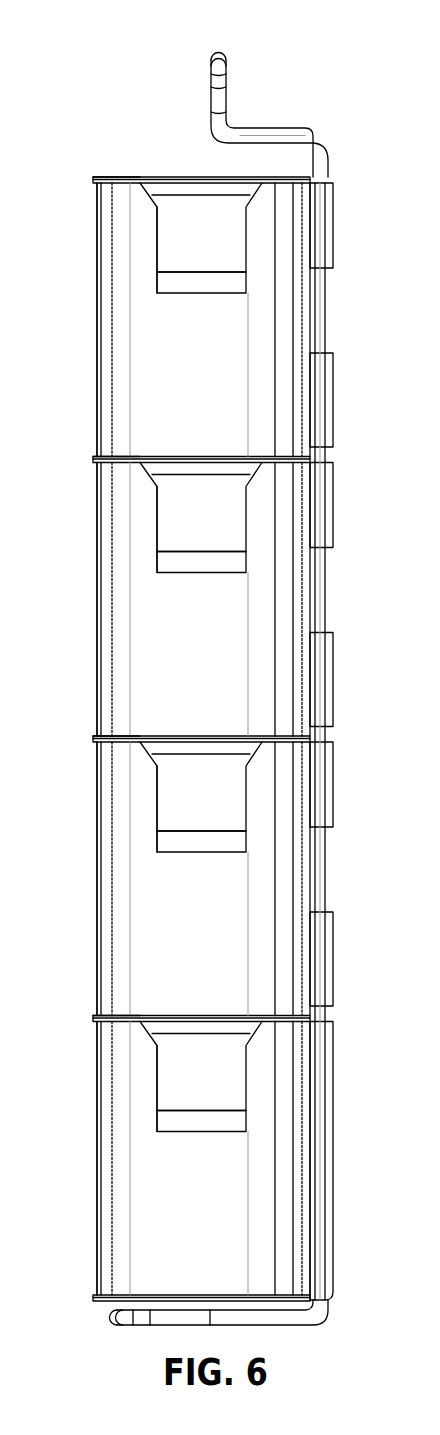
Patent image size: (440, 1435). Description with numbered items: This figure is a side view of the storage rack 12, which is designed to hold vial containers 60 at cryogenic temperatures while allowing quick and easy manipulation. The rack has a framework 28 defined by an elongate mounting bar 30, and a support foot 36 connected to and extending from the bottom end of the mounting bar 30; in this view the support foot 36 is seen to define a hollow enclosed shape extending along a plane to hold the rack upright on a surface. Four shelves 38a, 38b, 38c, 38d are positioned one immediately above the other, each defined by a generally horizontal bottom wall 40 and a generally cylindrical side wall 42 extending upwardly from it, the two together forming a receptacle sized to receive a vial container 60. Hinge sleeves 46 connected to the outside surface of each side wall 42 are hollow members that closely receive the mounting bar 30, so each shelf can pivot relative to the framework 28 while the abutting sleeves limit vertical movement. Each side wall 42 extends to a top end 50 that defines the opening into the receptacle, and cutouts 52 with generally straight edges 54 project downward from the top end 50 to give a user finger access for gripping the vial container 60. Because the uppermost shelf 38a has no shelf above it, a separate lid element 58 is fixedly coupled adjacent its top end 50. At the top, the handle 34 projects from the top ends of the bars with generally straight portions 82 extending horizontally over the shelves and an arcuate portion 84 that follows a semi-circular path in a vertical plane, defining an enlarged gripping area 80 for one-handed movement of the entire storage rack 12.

The storage rack 12 is at (67, 122).
The framework 28 is at (331, 305).
The mounting bar 30 is at (326, 331).
The handle 34 is at (207, 51).
The support foot 36 is at (285, 1326).
The shelf 38a is at (96, 342).
The shelf 38b is at (96, 622).
The shelf 38c is at (96, 901).
The shelf 38d is at (96, 1178).
The bottom wall 40 is at (93, 1297).
The side wall 42 is at (203, 739).
The hinge sleeve 46 is at (345, 741).
The top end 50 is at (118, 182).
The cutout 52 is at (109, 664).
The straight edges 54 is at (145, 695).
The lid element 58 is at (158, 176).
The vial container 60 is at (201, 657).
The gripping area 80 is at (230, 73).
The straight portions 82 is at (270, 136).
The arcuate portion 84 is at (212, 85).